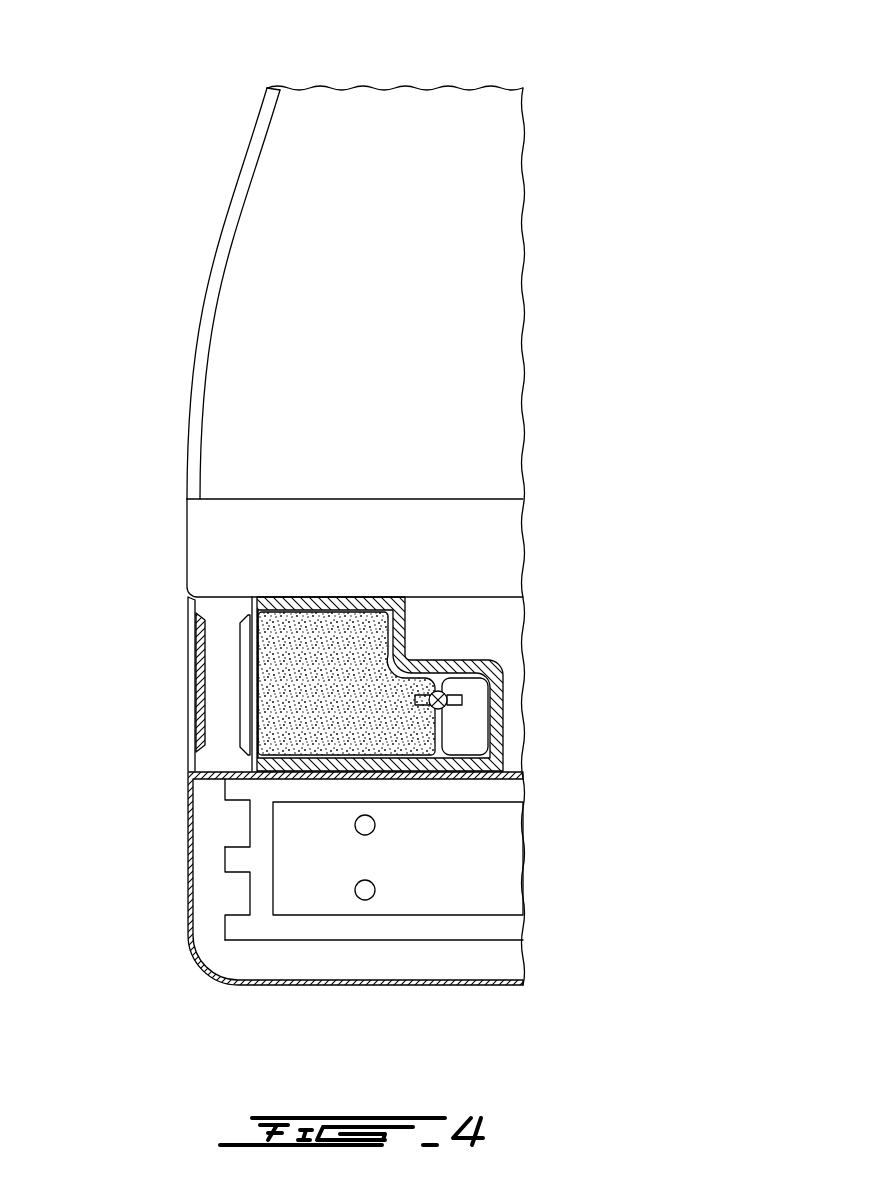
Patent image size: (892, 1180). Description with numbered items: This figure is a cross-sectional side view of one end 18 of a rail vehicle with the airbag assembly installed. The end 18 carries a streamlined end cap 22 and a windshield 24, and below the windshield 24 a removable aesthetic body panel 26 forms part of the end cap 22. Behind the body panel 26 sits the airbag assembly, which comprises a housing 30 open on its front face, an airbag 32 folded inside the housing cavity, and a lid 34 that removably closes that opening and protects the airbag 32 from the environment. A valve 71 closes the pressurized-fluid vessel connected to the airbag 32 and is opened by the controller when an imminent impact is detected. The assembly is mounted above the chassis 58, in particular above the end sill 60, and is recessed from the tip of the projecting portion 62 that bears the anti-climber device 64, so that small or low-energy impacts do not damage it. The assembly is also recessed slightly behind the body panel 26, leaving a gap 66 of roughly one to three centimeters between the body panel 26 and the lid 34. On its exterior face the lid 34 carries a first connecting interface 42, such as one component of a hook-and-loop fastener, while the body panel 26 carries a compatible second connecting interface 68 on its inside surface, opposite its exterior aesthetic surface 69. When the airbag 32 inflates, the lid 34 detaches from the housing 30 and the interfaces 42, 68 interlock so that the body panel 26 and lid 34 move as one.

The end 18 is at (125, 140).
The end cap 22 is at (187, 508).
The windshield 24 is at (252, 167).
The aesthetic body panel 26 is at (188, 745).
The housing 30 is at (503, 722).
The airbag 32 is at (357, 663).
The lid 34 is at (256, 617).
The first connecting interface 42 is at (222, 665).
The chassis 58 is at (330, 895).
The end sill 60 is at (247, 925).
The projecting portion 62 is at (225, 788).
The anti-climber device 64 is at (225, 858).
The gap 66 is at (200, 662).
The second connecting interface 68 is at (188, 705).
The exterior aesthetic surface 69 is at (160, 679).
The valve 71 is at (446, 698).